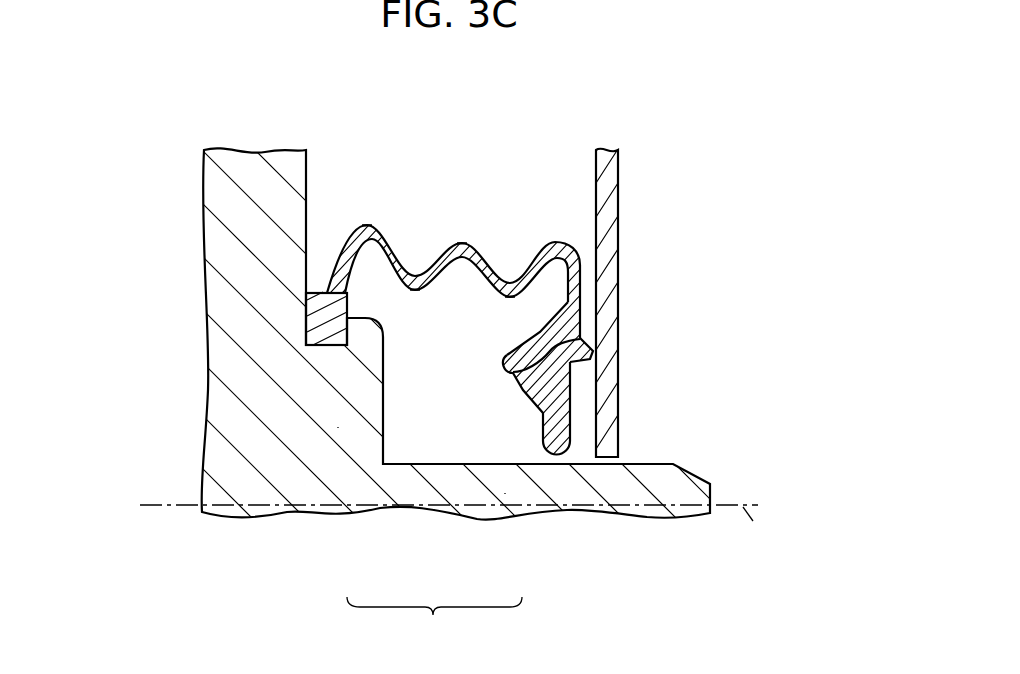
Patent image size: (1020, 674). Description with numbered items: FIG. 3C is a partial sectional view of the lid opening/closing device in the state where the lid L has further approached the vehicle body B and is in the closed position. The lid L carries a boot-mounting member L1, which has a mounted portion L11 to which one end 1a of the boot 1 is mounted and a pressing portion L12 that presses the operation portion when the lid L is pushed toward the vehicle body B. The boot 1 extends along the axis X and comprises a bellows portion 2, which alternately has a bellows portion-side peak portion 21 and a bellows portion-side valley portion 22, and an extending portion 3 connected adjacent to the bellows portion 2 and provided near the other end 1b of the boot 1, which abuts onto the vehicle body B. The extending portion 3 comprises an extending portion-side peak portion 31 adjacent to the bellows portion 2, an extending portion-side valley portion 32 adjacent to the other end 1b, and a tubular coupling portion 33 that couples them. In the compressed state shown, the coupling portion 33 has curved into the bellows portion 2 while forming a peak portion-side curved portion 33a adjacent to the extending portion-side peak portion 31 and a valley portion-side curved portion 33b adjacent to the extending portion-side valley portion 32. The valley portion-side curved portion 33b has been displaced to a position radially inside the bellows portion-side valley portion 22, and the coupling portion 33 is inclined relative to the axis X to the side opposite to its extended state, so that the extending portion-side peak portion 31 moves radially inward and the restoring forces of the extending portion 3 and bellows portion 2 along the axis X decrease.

The lid L is at (227, 207).
The vehicle body B is at (607, 182).
The boot 1 is at (455, 320).
The one end of the boot 1a is at (320, 311).
The other end of the boot 1b is at (585, 350).
The bellows portion 2 is at (422, 203).
The bellows portion-side peak portion 21 is at (370, 230).
The bellows portion-side valley portion 22 is at (414, 287).
The extending portion 3 is at (611, 379).
The extending portion-side peak portion 31 is at (554, 243).
The extending portion-side valley portion 32 is at (528, 385).
The coupling portion 33 is at (561, 320).
The peak portion-side curved portion 33a is at (577, 272).
The valley portion-side curved portion 33b is at (510, 364).
The axis X is at (457, 546).
The boot-mounting member L1 is at (434, 622).
The mounted portion L11 is at (338, 427).
The pressing portion L12 is at (505, 493).